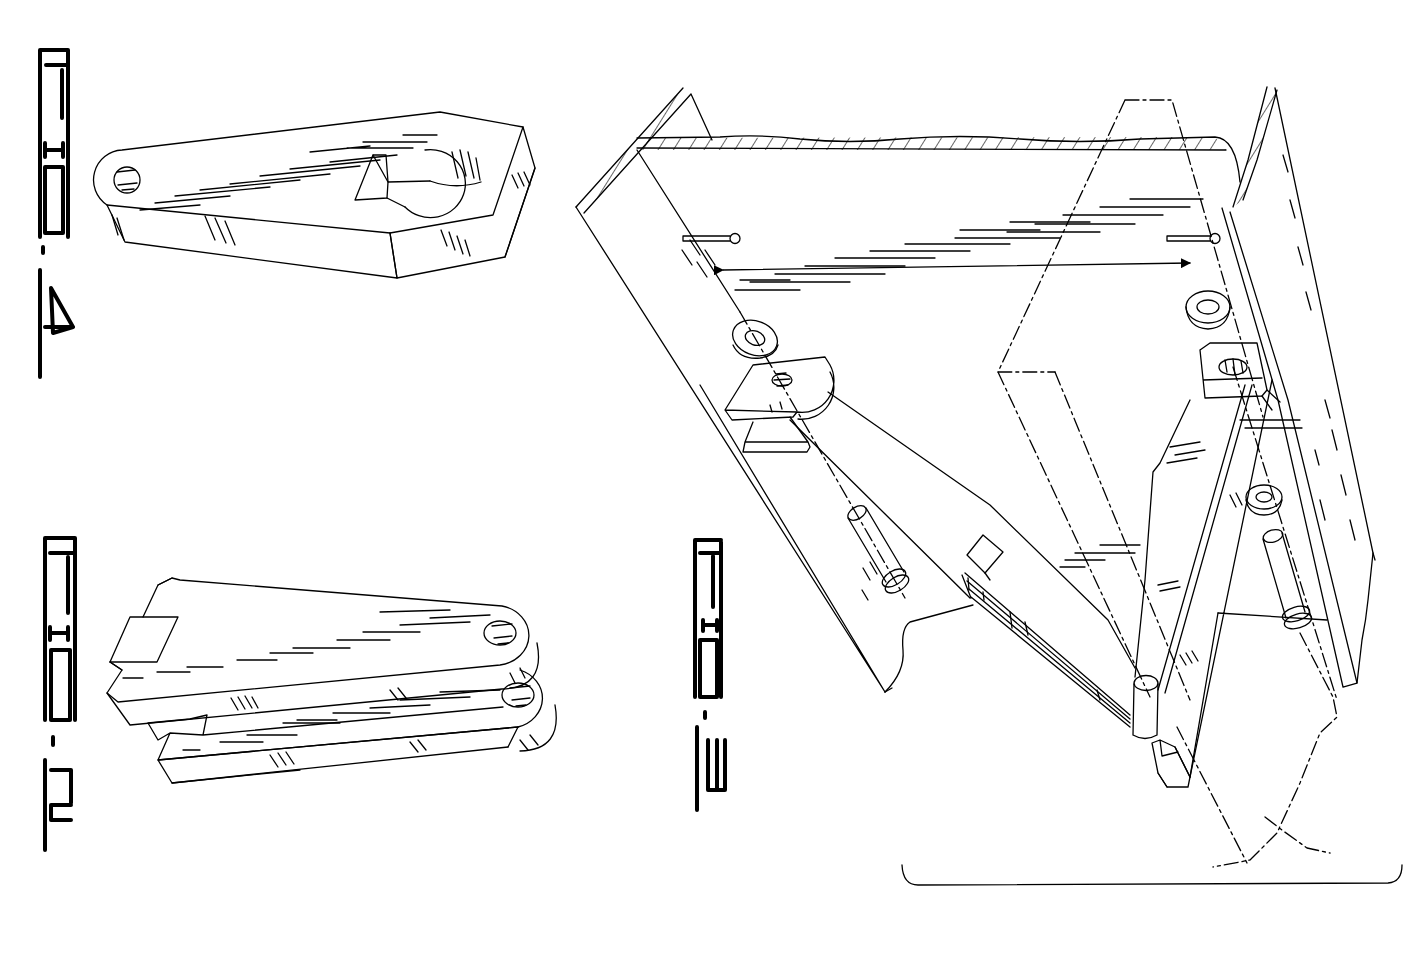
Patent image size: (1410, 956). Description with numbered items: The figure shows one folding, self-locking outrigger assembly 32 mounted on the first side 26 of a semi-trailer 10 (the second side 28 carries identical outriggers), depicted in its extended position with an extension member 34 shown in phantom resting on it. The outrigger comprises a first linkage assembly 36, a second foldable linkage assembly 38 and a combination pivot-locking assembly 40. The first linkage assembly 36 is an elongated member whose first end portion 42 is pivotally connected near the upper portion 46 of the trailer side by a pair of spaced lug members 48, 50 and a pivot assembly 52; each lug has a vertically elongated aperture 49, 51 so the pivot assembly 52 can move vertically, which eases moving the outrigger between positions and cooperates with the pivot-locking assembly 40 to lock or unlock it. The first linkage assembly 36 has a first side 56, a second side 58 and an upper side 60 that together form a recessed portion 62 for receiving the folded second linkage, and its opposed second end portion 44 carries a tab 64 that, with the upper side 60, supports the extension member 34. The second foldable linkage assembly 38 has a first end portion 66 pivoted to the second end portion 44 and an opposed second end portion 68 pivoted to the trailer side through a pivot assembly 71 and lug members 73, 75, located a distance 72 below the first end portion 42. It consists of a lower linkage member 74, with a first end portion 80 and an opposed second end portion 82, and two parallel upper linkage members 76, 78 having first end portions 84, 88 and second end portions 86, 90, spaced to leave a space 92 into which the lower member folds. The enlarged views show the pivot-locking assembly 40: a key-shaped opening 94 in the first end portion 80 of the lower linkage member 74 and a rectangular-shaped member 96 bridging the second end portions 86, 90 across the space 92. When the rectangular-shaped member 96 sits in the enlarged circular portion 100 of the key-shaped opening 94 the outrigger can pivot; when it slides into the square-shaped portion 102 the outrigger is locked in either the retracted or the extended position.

In FIG. 3, the semi-trailer 10 is at (1376, 691).
In FIG. 3, the first side 26 is at (938, 213).
In FIG. 3, the second side 28 is at (774, 390).
In FIG. 3, the folding, self-locking outrigger assembly 32 is at (1208, 706).
In FIG. 3, the extension member 34 is at (1282, 830).
In FIG. 3, the first linkage assembly 36 is at (1222, 615).
In FIG. 4, the second foldable linkage assembly 38 is at (501, 270).
In FIG. 5, the second foldable linkage assembly 38 is at (527, 753).
In FIG. 3, the second foldable linkage assembly 38 is at (1012, 630).
In FIG. 4, the combination pivot-locking assembly 40 is at (447, 207).
In FIG. 5, the combination pivot-locking assembly 40 is at (110, 613).
In FIG. 3, the combination pivot-locking assembly 40 is at (882, 591).
In FIG. 3, the first end portion 42 is at (1220, 403).
In FIG. 3, the opposed second end portion 44 is at (1180, 733).
In FIG. 3, the upper portion 46 is at (1200, 143).
In FIG. 3, the lug member 48 is at (1238, 337).
In FIG. 3, the elongated aperture 49 is at (1227, 367).
In FIG. 3, the lug member 50 is at (1270, 445).
In FIG. 3, the elongated aperture 51 is at (1287, 420).
In FIG. 3, the pivot assembly 52 is at (1301, 630).
In FIG. 3, the first side 56 is at (1193, 539).
In FIG. 3, the second side 58 is at (1153, 780).
In FIG. 3, the upper side 60 is at (1250, 515).
In FIG. 3, the recessed portion 62 is at (1150, 750).
In FIG. 3, the tab 64 is at (1162, 797).
In FIG. 3, the first end portion 66 is at (1125, 640).
In FIG. 3, the opposed second end portion 68 is at (748, 447).
In FIG. 3, the pivot assembly 71 is at (832, 628).
In FIG. 3, the distance 72 is at (948, 272).
In FIG. 3, the lug member 73 is at (735, 415).
In FIG. 4, the lower linkage member 74 is at (303, 243).
In FIG. 3, the lower linkage member 74 is at (912, 449).
In FIG. 3, the lug member 75 is at (778, 452).
In FIG. 5, the upper linkage member 76 is at (330, 613).
In FIG. 3, the upper linkage member 76 is at (1031, 546).
In FIG. 5, the upper linkage member 78 is at (375, 759).
In FIG. 3, the upper linkage member 78 is at (1066, 685).
In FIG. 4, the first end portion 80 is at (507, 131).
In FIG. 3, the first end portion 80 is at (1027, 633).
In FIG. 4, the opposed second end portion 82 is at (133, 233).
In FIG. 3, the opposed second end portion 82 is at (832, 362).
In FIG. 5, the first end portion 84 is at (502, 610).
In FIG. 5, the opposed second end portion 86 is at (180, 588).
In FIG. 3, the opposed second end portion 86 is at (980, 612).
In FIG. 5, the first end portion 88 is at (508, 743).
In FIG. 5, the opposed second end portion 90 is at (218, 773).
In FIG. 3, the opposed second end portion 90 is at (982, 630).
In FIG. 5, the space 92 is at (440, 713).
In FIG. 3, the space 92 is at (1097, 692).
In FIG. 4, the key-shaped opening 94 is at (393, 198).
In FIG. 5, the rectangular-shaped member 96 is at (130, 623).
In FIG. 3, the rectangular-shaped member 96 is at (969, 548).
In FIG. 4, the enlarged substantially circular portion 100 is at (457, 187).
In FIG. 4, the substantially square-shaped portion 102 is at (382, 150).